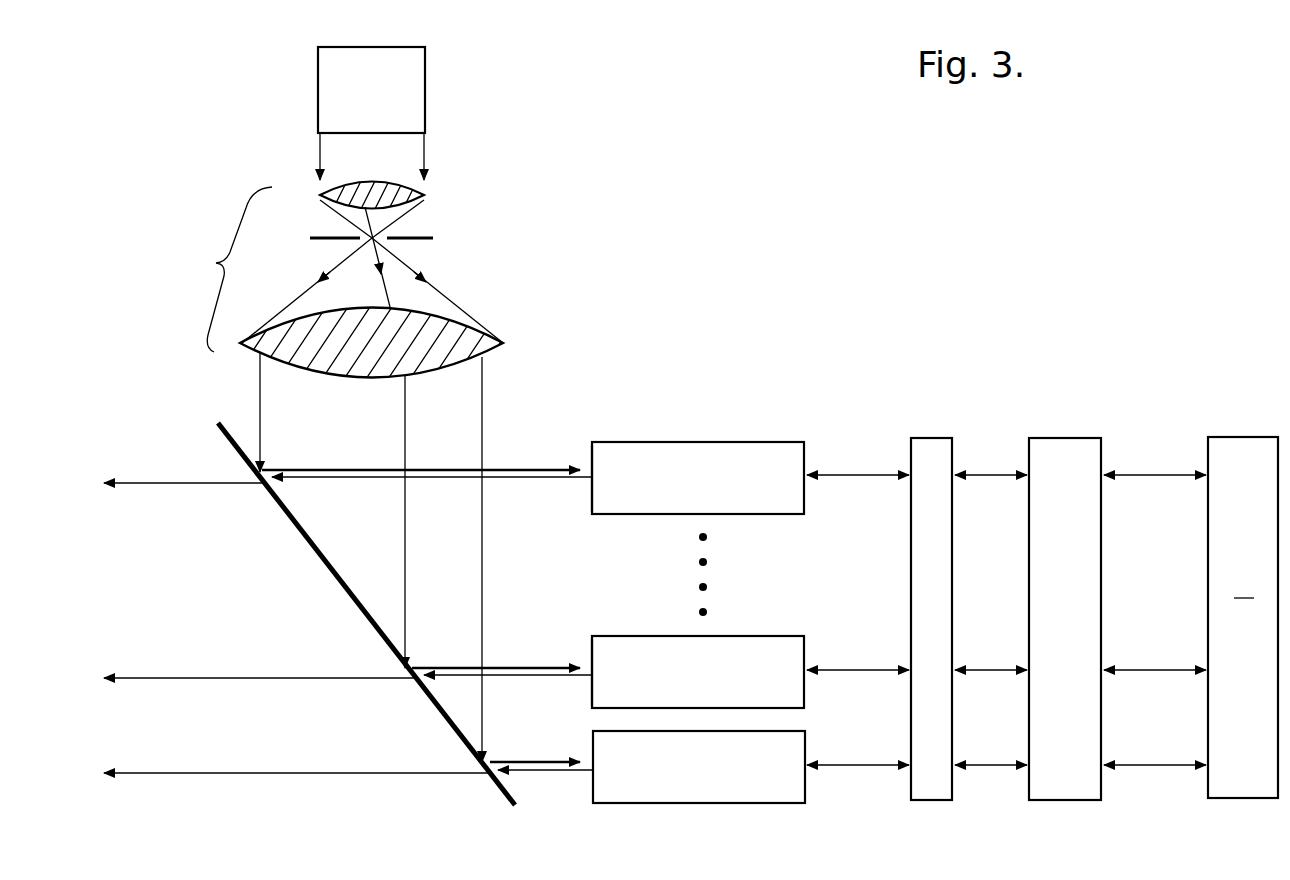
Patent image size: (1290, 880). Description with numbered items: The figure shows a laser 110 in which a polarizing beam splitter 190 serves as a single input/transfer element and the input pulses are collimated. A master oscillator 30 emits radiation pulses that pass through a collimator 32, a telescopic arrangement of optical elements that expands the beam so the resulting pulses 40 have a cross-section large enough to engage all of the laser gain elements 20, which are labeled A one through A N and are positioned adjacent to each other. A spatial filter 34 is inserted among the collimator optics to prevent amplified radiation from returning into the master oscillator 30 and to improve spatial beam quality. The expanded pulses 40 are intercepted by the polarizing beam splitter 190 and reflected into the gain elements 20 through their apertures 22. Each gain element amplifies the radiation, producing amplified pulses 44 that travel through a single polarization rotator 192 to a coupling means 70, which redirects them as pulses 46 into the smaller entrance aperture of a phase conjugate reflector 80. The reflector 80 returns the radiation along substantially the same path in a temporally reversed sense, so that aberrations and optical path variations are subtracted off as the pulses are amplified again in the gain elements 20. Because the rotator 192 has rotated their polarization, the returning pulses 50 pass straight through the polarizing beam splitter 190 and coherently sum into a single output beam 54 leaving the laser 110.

The laser 110 is at (764, 246).
The master oscillator 30 is at (425, 68).
The collimator 32 is at (353, 259).
The spatial filter 34 is at (436, 240).
The pulses 40 is at (260, 415).
The polarizing beam splitter 190 is at (225, 438).
The pulses 50 is at (350, 482).
The output beam 54 is at (210, 605).
The laser gain elements 20 is at (753, 440).
The apertures 22 is at (592, 452).
The amplified pulses 44 is at (863, 478).
The polarization rotator 192 is at (920, 437).
The coupling means 70 is at (1043, 437).
The pulses 46 is at (1128, 477).
The phase conjugate reflector 80 is at (1218, 437).